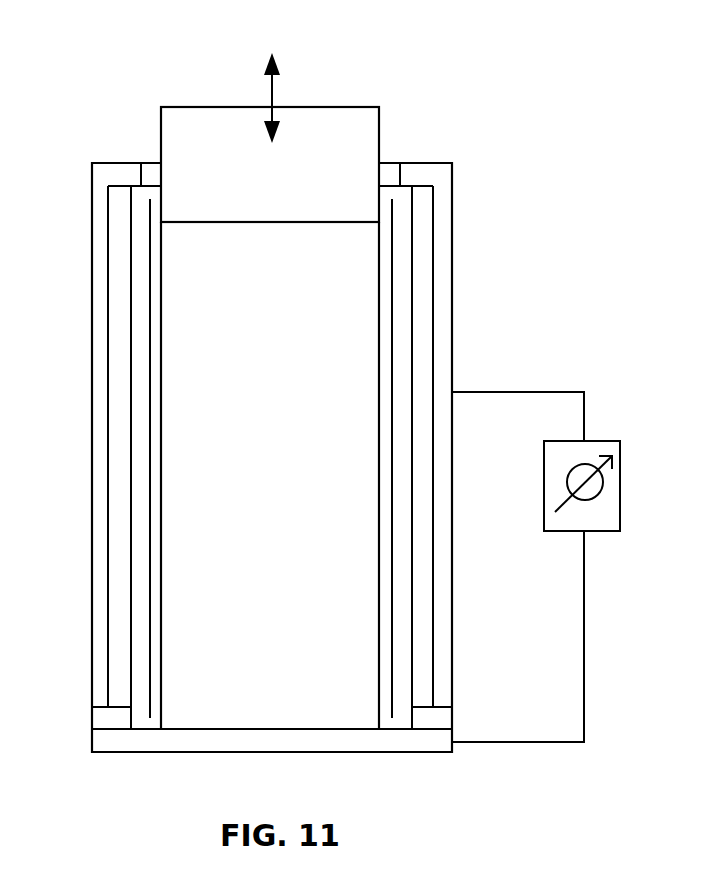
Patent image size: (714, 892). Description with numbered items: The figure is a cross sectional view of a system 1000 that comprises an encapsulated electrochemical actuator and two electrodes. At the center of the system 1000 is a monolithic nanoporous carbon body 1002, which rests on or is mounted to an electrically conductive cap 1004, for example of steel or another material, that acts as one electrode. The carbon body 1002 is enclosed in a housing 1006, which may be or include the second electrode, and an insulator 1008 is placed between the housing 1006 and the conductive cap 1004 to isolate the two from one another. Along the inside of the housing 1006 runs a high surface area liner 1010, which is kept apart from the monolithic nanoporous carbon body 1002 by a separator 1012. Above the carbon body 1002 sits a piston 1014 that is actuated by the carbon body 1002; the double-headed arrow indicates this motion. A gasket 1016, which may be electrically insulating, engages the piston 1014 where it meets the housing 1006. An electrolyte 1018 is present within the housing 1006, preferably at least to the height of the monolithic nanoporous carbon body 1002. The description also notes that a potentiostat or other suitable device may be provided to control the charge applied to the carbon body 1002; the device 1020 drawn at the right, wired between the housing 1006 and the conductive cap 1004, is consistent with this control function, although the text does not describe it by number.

The system 1000 is at (482, 158).
The monolithic nanoporous carbon body 1002 is at (308, 693).
The electrically conductive cap 1004 is at (245, 740).
The housing 1006 is at (98, 543).
The insulator 1008 is at (107, 718).
The high surface area liner 1010 is at (118, 382).
The separator 1012 is at (150, 332).
The piston 1014 is at (303, 147).
The gasket 1016 is at (152, 177).
The electrolyte 1018 is at (395, 196).
The variable power source 1020 is at (622, 485).